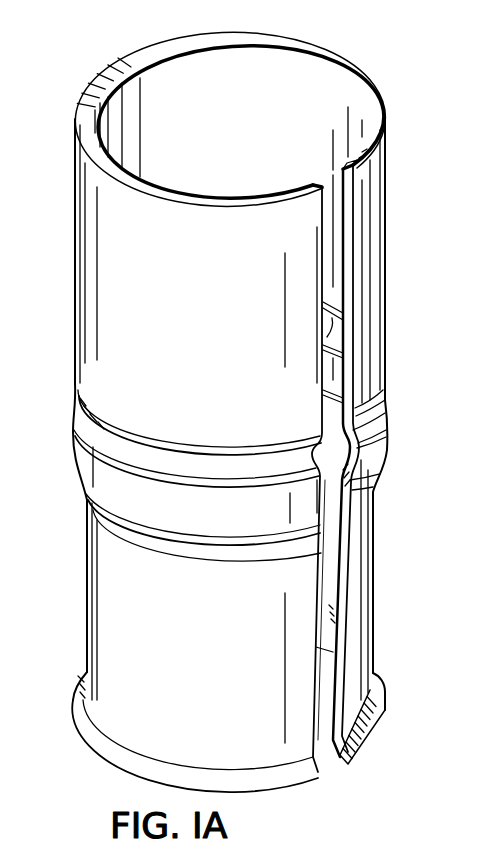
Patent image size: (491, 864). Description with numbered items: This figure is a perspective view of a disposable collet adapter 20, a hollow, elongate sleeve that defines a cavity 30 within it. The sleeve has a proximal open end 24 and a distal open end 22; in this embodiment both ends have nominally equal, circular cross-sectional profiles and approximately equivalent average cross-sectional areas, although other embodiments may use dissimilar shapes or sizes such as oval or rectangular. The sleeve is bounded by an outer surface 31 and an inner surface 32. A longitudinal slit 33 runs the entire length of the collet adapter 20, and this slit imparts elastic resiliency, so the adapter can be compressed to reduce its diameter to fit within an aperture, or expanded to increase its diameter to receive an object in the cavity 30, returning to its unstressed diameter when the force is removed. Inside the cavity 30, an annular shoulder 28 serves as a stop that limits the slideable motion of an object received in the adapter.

The collet adapter 20 is at (386, 63).
The distal open end 22 is at (133, 615).
The proximal open end 24 is at (125, 268).
The annular shoulder 28 is at (73, 388).
The cavity 30 is at (171, 64).
The outer surface 31 is at (151, 236).
The inner surface 32 is at (317, 114).
The longitudinal slit 33 is at (334, 760).